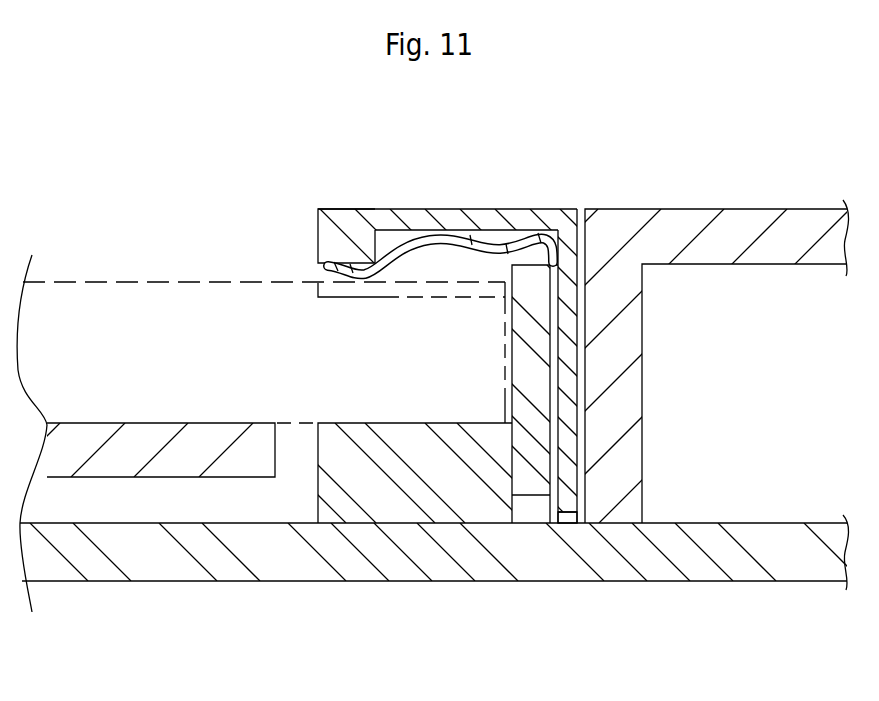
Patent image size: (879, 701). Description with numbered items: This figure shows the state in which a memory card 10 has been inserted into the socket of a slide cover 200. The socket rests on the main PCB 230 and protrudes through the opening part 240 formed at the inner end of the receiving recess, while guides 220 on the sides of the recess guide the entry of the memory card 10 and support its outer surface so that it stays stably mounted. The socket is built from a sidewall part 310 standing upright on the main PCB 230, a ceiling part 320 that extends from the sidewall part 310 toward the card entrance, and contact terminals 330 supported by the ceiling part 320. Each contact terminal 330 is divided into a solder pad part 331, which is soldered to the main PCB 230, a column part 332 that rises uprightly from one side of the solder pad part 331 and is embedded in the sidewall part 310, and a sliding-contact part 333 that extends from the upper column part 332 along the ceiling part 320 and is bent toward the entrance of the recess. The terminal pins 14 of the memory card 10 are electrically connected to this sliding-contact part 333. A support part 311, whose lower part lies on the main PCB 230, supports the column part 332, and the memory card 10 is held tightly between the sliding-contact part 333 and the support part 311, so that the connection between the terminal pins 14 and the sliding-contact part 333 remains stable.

The memory card 10 is at (145, 282).
The terminal pins 14 is at (423, 298).
The slide cover 200 is at (688, 212).
The guide 220 is at (95, 423).
The main PCB 230 is at (678, 563).
The opening part 240 is at (283, 450).
The sidewall part 310 is at (568, 328).
The support part 311 is at (393, 507).
The ceiling part 320 is at (318, 212).
The contact terminal 330 is at (500, 238).
The solder pad part 331 is at (565, 536).
The column part 332 is at (573, 413).
The sliding-contact part 333 is at (412, 226).